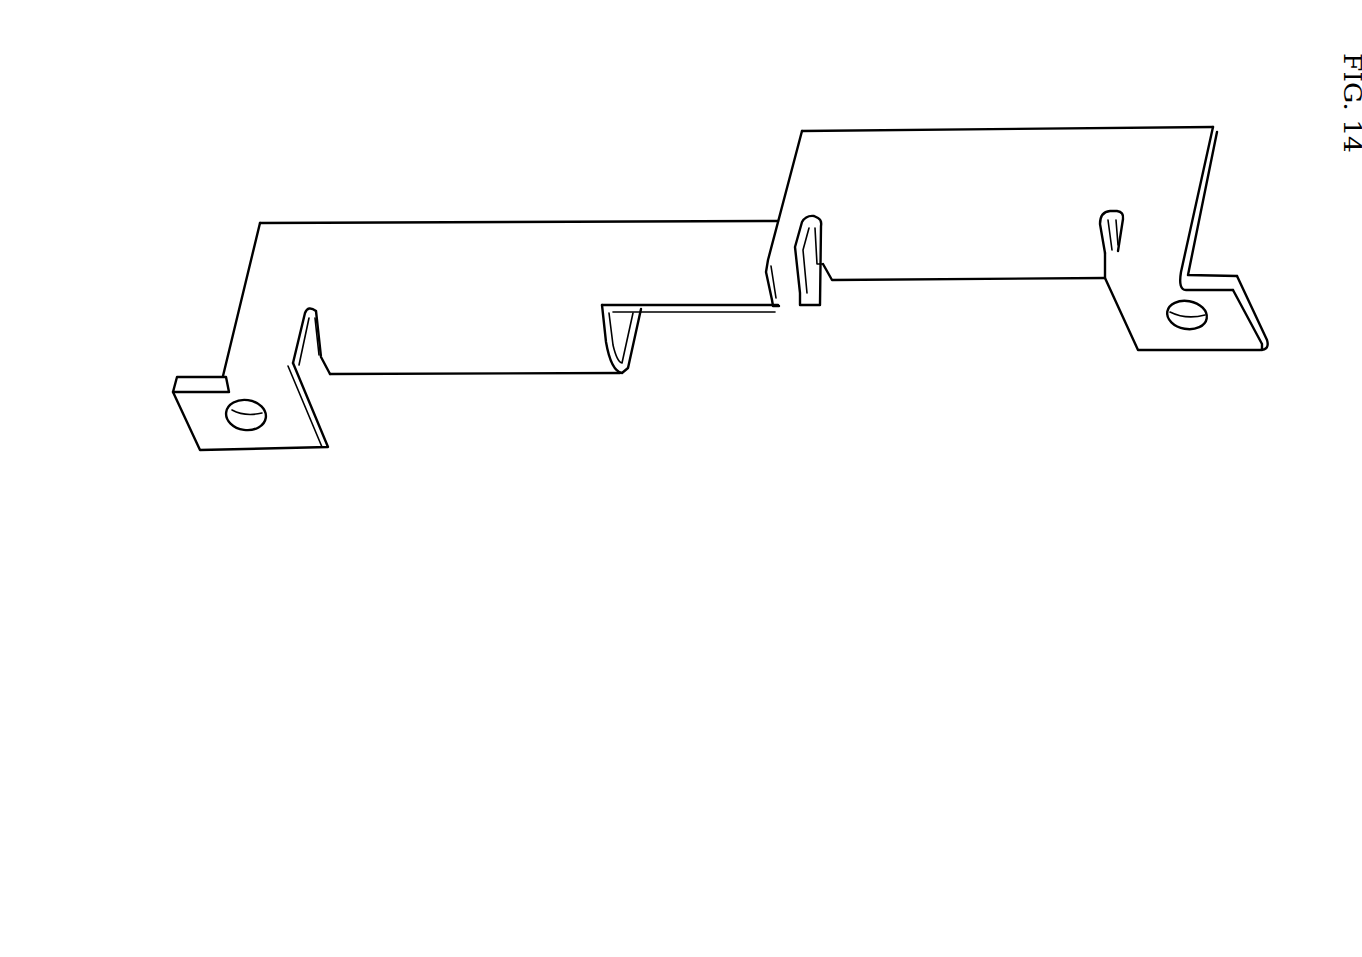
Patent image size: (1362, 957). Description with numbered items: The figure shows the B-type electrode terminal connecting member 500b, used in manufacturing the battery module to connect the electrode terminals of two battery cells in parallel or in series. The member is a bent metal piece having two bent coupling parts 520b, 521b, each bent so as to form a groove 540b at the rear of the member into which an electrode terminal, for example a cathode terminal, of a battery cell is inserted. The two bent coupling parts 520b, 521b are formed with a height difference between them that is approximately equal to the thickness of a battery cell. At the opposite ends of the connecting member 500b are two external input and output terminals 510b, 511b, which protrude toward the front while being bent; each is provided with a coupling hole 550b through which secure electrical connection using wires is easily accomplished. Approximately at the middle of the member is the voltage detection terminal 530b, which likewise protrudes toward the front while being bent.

The electrode terminal connecting member 500b is at (147, 95).
The external input and output terminal 510b is at (208, 439).
The external input and output terminal 511b is at (1167, 333).
The bent coupling part 520b is at (477, 362).
The bent coupling part 521b is at (968, 263).
The voltage detection terminal 530b is at (797, 297).
The groove 540b is at (470, 222).
The coupling hole 550b is at (227, 413).